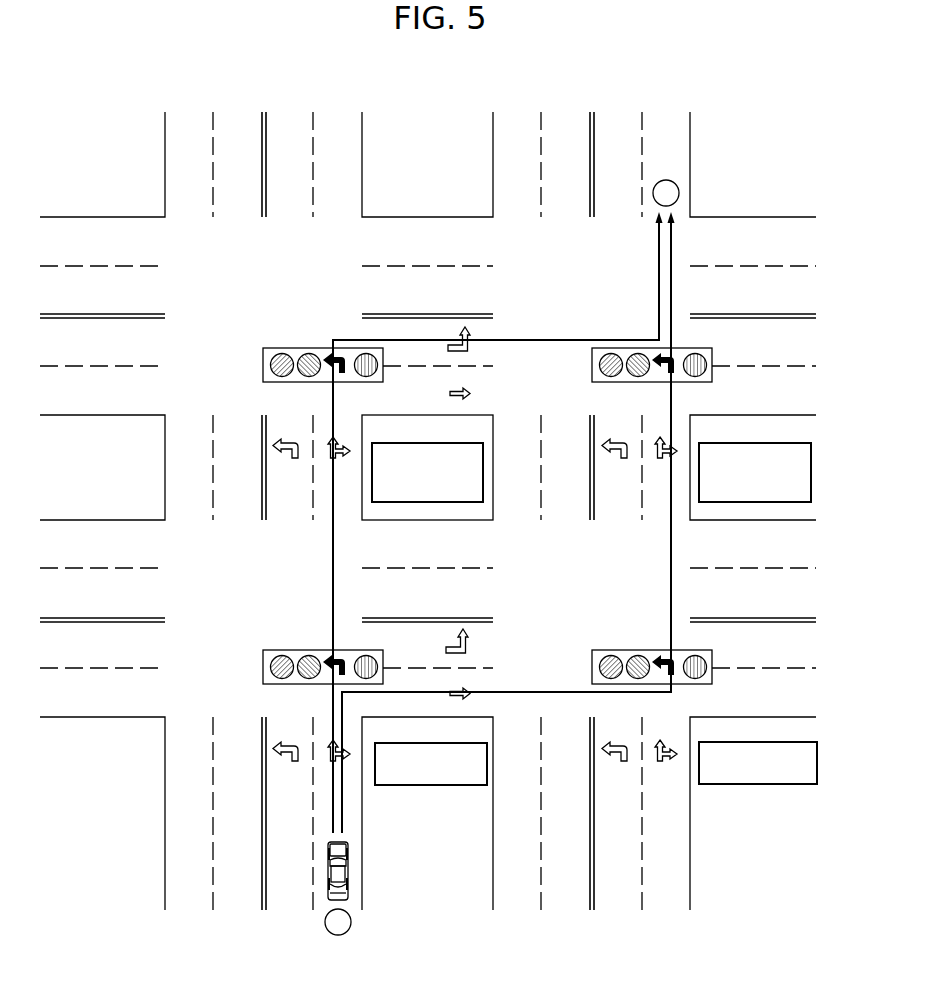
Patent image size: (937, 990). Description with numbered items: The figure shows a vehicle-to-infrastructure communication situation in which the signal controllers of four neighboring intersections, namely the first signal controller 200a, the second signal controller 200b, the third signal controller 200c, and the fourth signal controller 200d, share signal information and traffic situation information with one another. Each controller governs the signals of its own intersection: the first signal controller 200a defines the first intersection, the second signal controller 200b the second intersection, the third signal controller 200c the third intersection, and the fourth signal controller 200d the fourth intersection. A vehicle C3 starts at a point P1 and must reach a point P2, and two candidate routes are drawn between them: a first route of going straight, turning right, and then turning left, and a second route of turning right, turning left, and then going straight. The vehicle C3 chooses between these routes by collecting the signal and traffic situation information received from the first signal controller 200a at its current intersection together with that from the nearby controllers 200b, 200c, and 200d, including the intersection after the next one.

The first signal controller 200a is at (460, 785).
The second signal controller 200b is at (457, 502).
The third signal controller 200c is at (792, 784).
The fourth signal controller 200d is at (785, 502).
The vehicle C3 is at (348, 868).
The point P1 is at (338, 922).
The point P2 is at (666, 193).